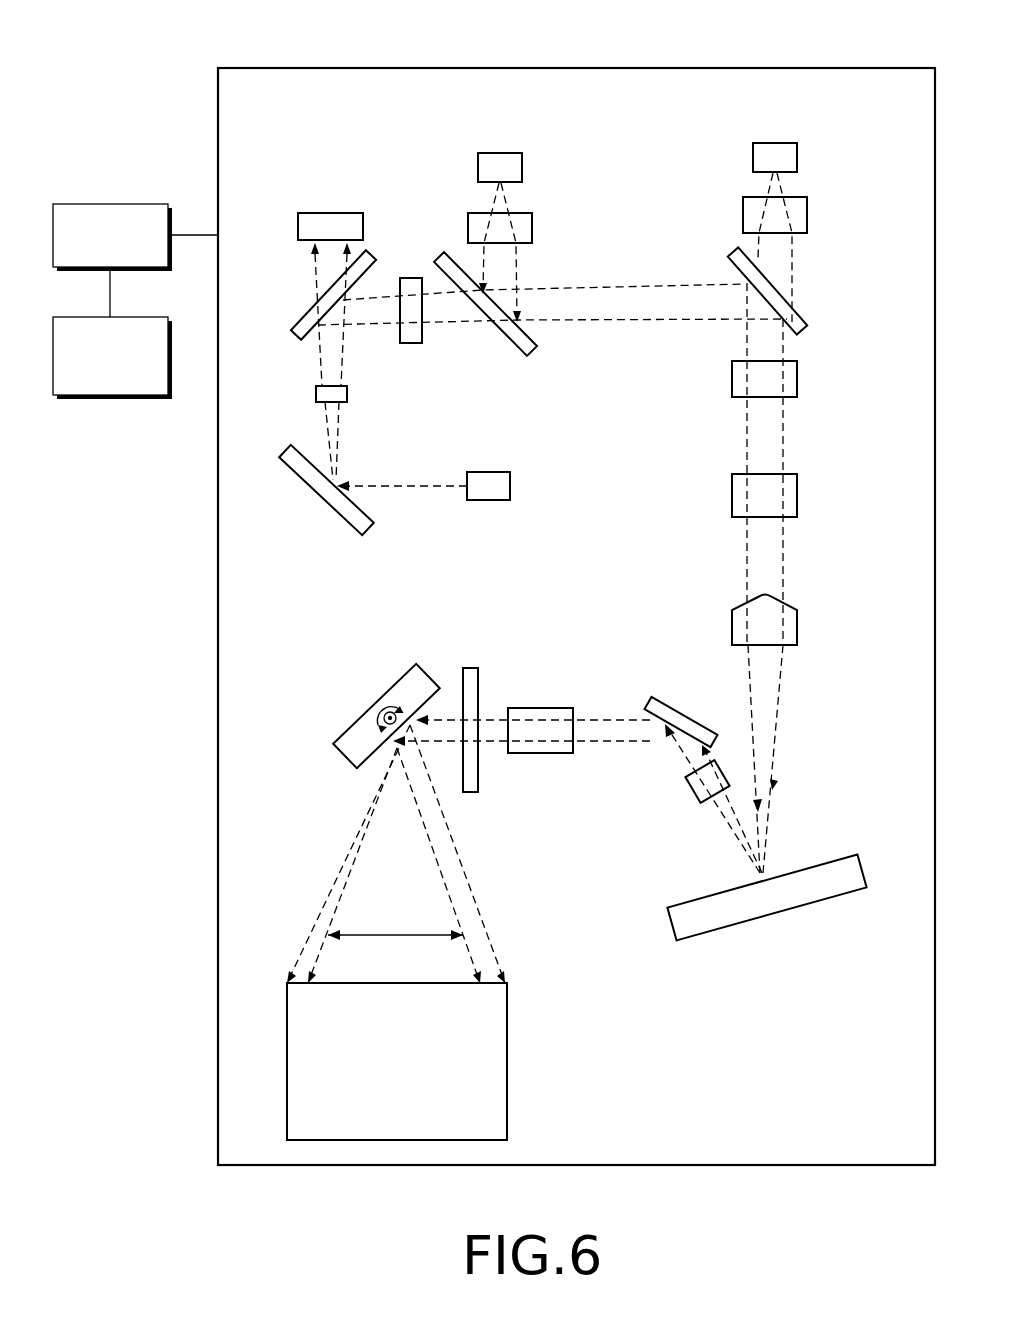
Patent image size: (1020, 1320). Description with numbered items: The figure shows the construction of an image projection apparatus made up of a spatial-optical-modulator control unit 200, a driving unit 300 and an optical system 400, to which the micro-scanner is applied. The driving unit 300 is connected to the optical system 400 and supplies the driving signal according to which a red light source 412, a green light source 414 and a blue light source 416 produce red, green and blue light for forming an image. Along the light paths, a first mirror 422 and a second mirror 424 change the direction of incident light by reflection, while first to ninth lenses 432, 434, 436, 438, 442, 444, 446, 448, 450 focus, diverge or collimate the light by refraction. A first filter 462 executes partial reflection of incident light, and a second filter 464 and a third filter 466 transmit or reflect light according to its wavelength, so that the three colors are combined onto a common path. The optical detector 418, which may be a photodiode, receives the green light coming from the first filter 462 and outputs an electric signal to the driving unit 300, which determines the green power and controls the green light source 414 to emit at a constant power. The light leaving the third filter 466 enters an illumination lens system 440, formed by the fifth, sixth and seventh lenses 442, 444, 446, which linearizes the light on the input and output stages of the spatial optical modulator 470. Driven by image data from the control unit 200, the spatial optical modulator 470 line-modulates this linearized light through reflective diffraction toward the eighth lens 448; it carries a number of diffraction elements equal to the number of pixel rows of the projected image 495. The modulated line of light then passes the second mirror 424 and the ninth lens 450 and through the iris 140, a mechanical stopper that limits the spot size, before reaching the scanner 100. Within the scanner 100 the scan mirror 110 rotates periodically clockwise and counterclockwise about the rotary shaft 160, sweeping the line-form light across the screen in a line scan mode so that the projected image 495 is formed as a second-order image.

The scanner 100 is at (467, 615).
The scan mirror 110 is at (398, 681).
The iris 140 is at (470, 667).
The rotary shaft 160 is at (372, 712).
The SOM control unit 200 is at (110, 397).
The driving unit 300 is at (108, 204).
The optical system 400 is at (578, 68).
The red light source 412 is at (500, 152).
The green light source 414 is at (510, 486).
The blue light source 416 is at (775, 142).
The optical detector 418 is at (330, 212).
The first mirror 422 is at (286, 452).
The second mirror 424 is at (683, 712).
The first lens 432 is at (347, 393).
The second lens 434 is at (411, 277).
The third lens 436 is at (532, 228).
The fourth lens 438 is at (807, 215).
The illumination lens system 440 is at (862, 375).
The fifth lens 442 is at (797, 379).
The sixth lens 444 is at (797, 495).
The seventh lens 446 is at (797, 627).
The eighth lens 448 is at (689, 789).
The ninth lens 450 is at (540, 707).
The first filter 462 is at (300, 312).
The second filter 464 is at (440, 255).
The third filter 466 is at (807, 322).
The spatial optical modulator 470 is at (865, 866).
The projected image 495 is at (520, 1055).